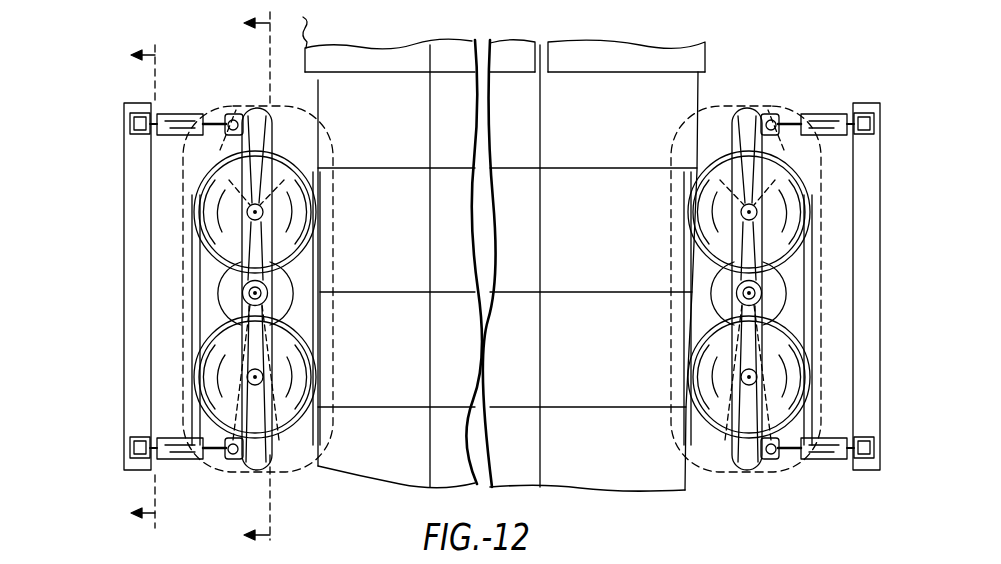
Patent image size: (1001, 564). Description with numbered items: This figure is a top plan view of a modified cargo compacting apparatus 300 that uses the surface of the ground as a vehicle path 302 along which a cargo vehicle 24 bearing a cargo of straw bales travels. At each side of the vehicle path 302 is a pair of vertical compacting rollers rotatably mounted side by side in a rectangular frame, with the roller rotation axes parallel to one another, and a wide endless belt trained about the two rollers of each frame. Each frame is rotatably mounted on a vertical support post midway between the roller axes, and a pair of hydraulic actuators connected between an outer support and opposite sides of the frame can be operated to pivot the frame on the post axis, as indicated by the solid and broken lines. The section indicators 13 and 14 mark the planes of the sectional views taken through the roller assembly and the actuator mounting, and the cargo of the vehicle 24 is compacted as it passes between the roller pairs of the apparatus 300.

The section line 13- 13 is at (275, 282).
The section line 14- 14 is at (160, 286).
The cargo vehicle 24 is at (688, 489).
The cargo compacting apparatus 300 is at (722, 40).
The vehicle path 302 is at (512, 39).